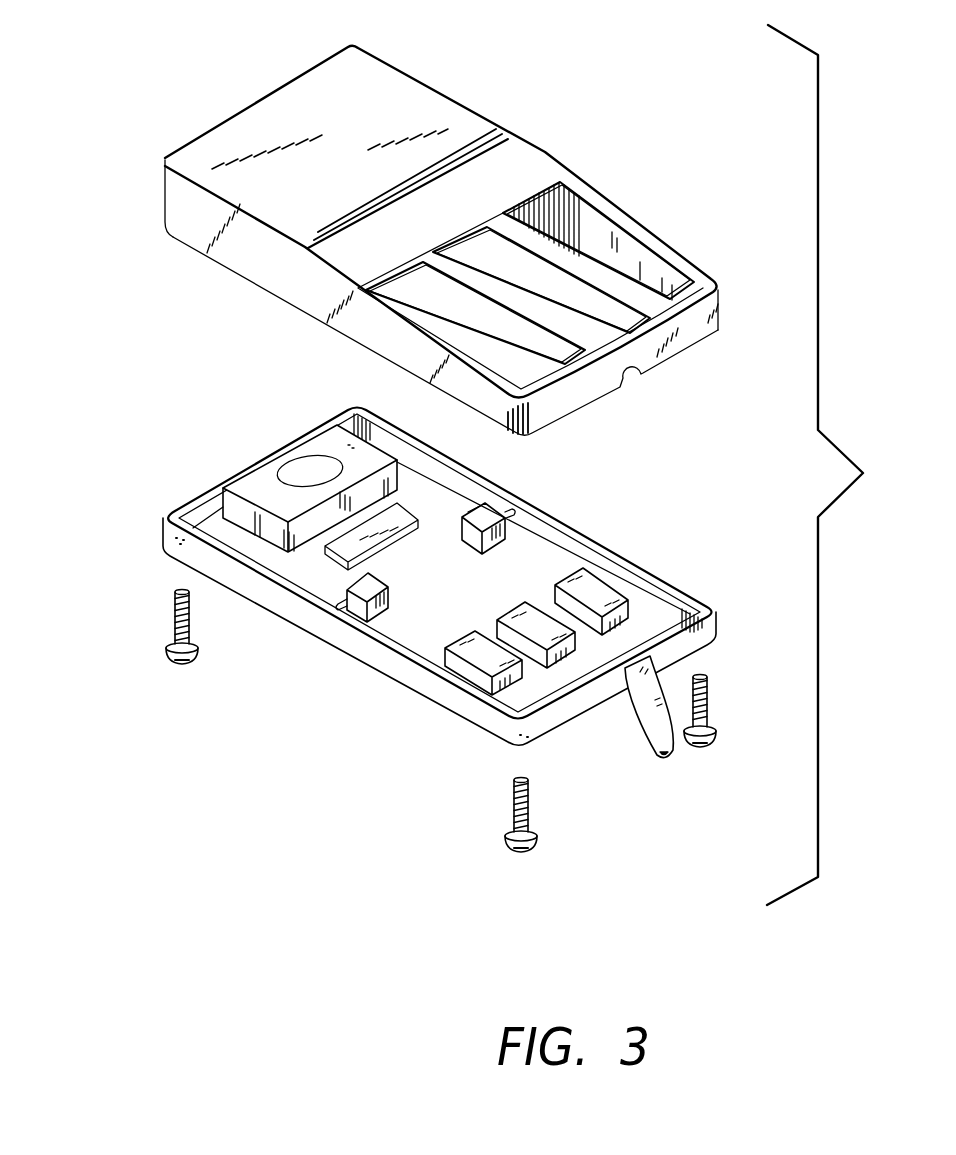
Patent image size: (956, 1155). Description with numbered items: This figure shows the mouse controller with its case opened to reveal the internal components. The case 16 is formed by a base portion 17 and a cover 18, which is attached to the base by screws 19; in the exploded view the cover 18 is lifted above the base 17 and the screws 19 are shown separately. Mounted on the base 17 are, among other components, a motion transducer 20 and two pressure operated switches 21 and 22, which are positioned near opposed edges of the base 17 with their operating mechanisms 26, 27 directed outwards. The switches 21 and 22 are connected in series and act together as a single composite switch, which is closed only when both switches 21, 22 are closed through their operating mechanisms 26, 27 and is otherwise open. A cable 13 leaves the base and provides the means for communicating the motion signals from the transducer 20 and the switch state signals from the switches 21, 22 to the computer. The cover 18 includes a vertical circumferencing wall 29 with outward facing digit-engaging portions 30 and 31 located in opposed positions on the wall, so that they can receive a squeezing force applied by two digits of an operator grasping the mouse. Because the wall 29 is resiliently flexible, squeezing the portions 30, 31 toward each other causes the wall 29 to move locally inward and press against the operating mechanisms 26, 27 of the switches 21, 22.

The cable 13 is at (648, 722).
The case 16 is at (639, 173).
The base portion 17 is at (370, 660).
The cover 18 is at (230, 110).
The screws 19 is at (172, 620).
The motion transducer 20 is at (398, 472).
The pressure operated switch 21 is at (372, 622).
The pressure operated switch 22 is at (489, 512).
The operating mechanism 26 is at (342, 609).
The operating mechanism 27 is at (515, 512).
The vertical circumferencing wall 29 is at (190, 224).
The digit-engaging portion 30 is at (318, 288).
The digit-engaging portion 31 is at (405, 125).